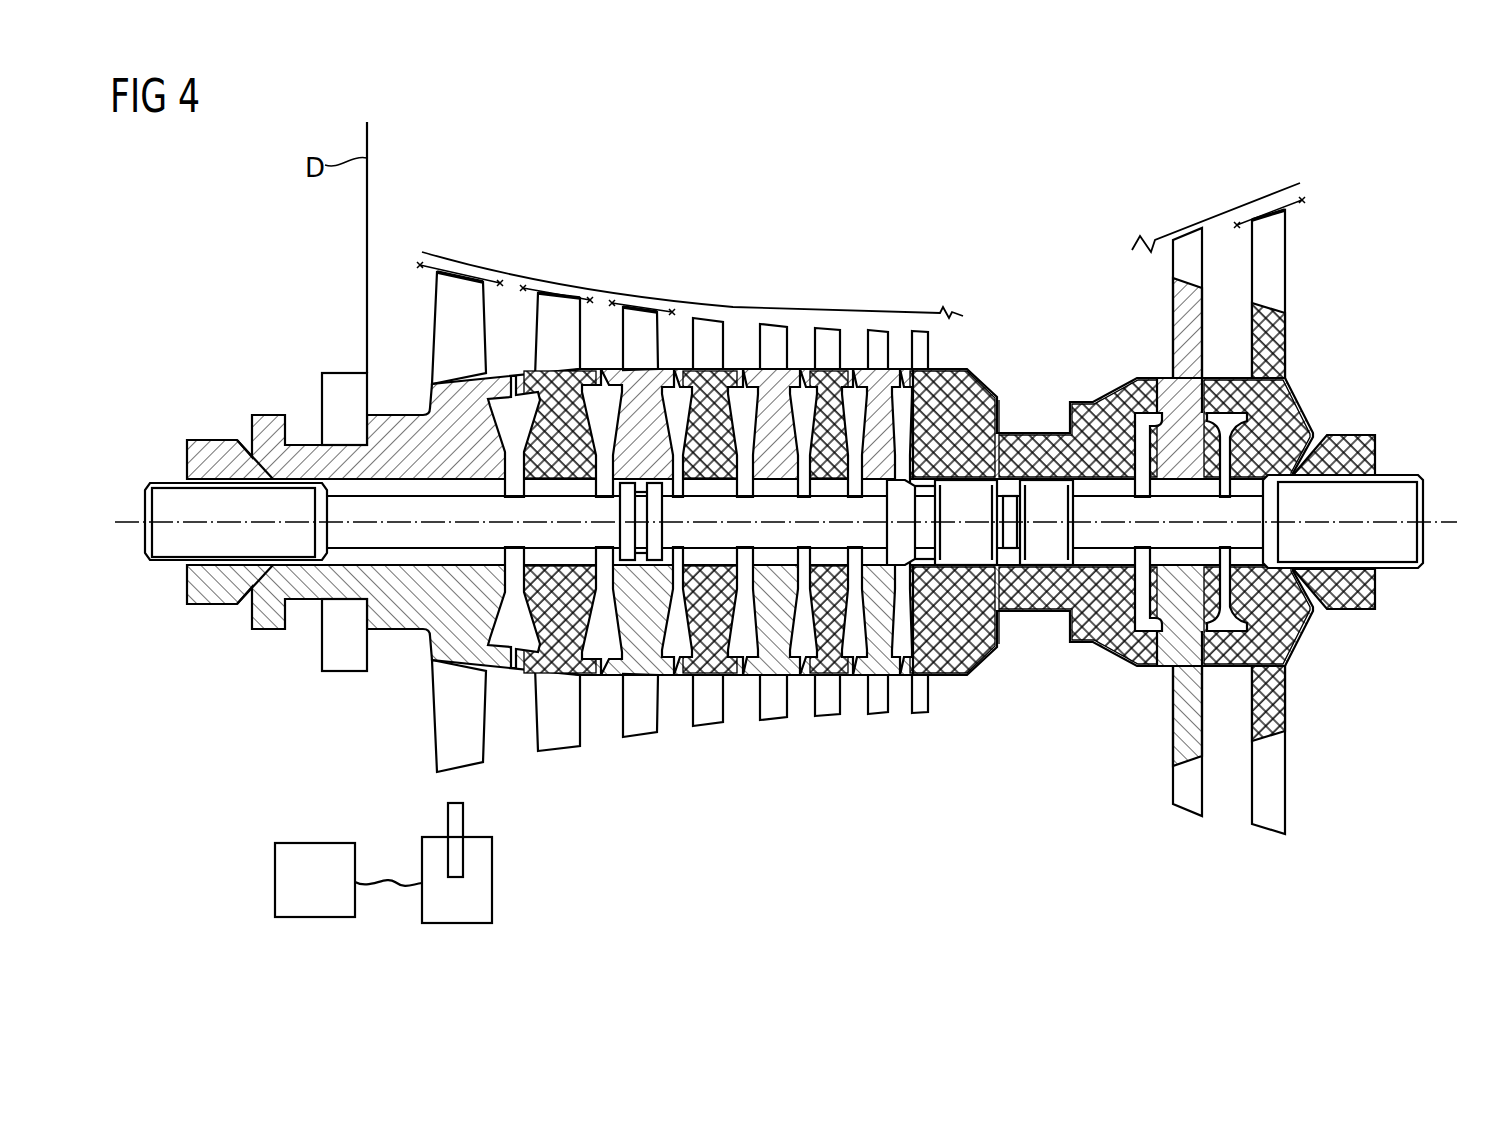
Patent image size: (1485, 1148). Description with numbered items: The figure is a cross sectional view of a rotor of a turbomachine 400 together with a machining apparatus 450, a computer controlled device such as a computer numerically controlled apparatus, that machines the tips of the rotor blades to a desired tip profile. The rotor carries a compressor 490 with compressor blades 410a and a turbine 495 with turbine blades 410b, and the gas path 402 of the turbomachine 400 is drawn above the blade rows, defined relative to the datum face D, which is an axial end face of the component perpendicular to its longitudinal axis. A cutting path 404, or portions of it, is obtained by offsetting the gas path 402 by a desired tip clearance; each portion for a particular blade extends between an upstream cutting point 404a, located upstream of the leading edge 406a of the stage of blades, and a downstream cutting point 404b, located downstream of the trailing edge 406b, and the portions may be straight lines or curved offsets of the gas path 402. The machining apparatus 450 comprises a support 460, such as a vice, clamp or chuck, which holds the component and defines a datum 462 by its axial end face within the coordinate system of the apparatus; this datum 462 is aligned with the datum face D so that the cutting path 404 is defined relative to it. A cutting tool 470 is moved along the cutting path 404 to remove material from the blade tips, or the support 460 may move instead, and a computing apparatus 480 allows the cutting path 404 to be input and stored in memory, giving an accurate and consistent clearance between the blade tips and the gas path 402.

The turbomachine 400 is at (950, 128).
The gas path 402 is at (753, 305).
The cutting path 404 is at (460, 270).
The upstream cutting point 404a is at (422, 250).
The downstream cutting point 404b is at (500, 282).
The leading edge 406a is at (437, 273).
The trailing edge 406b is at (490, 287).
The compressor blade 410a is at (563, 337).
The turbine blade 410b is at (1272, 260).
The machining apparatus 450 is at (230, 817).
The support 460 is at (333, 400).
The datum 462 is at (370, 393).
The cutting tool 470 is at (493, 878).
The computing apparatus 480 is at (315, 843).
The compressor 490 is at (726, 208).
The turbine 495 is at (1148, 200).